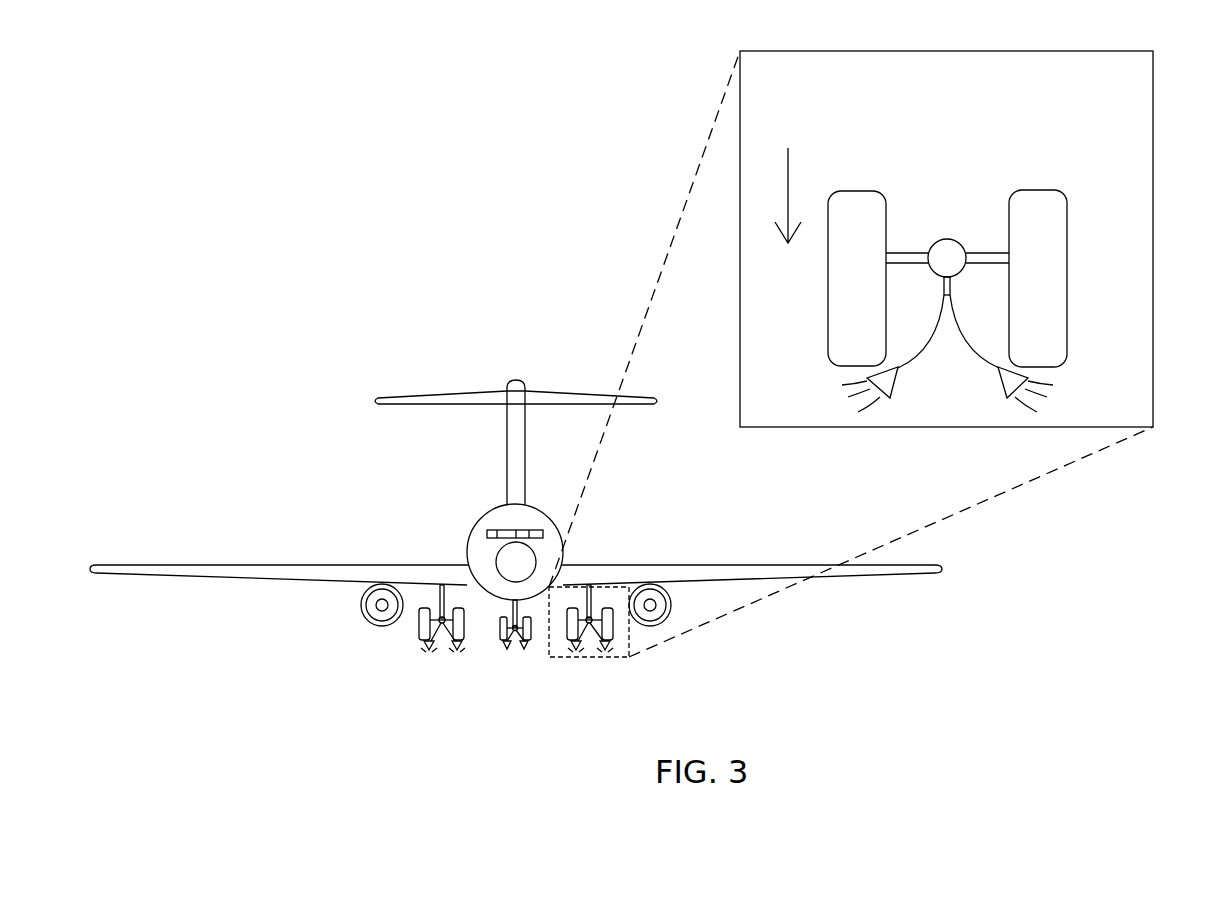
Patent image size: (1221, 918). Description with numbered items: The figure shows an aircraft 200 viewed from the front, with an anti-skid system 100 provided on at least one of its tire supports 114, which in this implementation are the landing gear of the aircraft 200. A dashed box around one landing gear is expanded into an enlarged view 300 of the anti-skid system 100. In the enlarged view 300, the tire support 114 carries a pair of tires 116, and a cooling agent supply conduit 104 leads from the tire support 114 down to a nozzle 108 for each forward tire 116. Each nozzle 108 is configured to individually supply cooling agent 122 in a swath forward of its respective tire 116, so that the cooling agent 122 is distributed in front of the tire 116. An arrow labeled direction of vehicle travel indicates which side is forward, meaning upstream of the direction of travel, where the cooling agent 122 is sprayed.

The anti-skid system 100 is at (548, 645).
The cooling agent supply conduit 104 is at (943, 290).
The nozzle 108 is at (1003, 388).
The tire support 114 is at (948, 250).
The tire 116 is at (848, 312).
The cooling agent 122 is at (845, 400).
The aircraft 200 is at (373, 573).
The enlarged view 300 is at (915, 51).